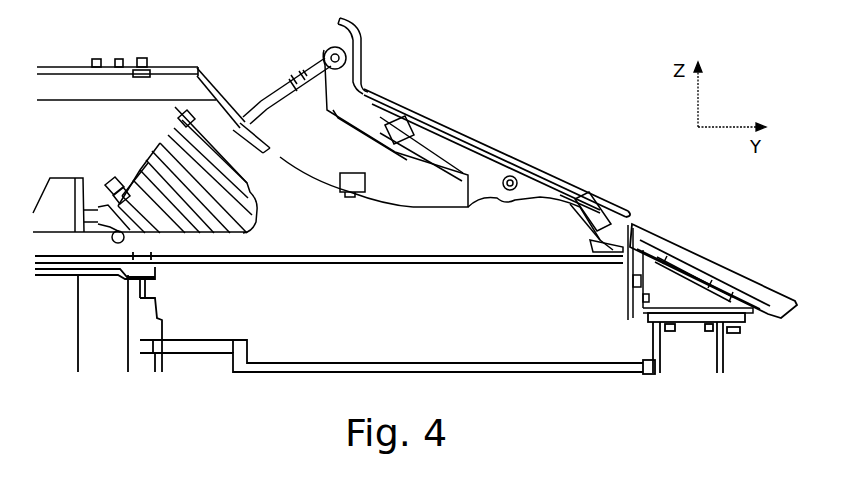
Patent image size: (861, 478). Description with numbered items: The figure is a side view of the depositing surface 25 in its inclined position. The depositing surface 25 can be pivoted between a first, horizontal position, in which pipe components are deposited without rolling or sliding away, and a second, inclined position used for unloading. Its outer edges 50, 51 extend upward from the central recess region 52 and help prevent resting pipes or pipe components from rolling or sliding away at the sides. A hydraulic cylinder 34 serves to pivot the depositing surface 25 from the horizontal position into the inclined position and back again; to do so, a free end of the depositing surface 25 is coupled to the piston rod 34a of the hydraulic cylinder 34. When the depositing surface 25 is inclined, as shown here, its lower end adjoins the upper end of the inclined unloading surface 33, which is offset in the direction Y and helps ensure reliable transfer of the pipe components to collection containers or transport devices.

The depositing surface 25 is at (516, 108).
The unloading surface 33 is at (717, 262).
The hydraulic cylinder 34 is at (190, 158).
The piston rod 34a is at (273, 110).
The outer edge 50 is at (370, 88).
The outer edge 51 is at (612, 208).
The central recess region 52 is at (493, 157).